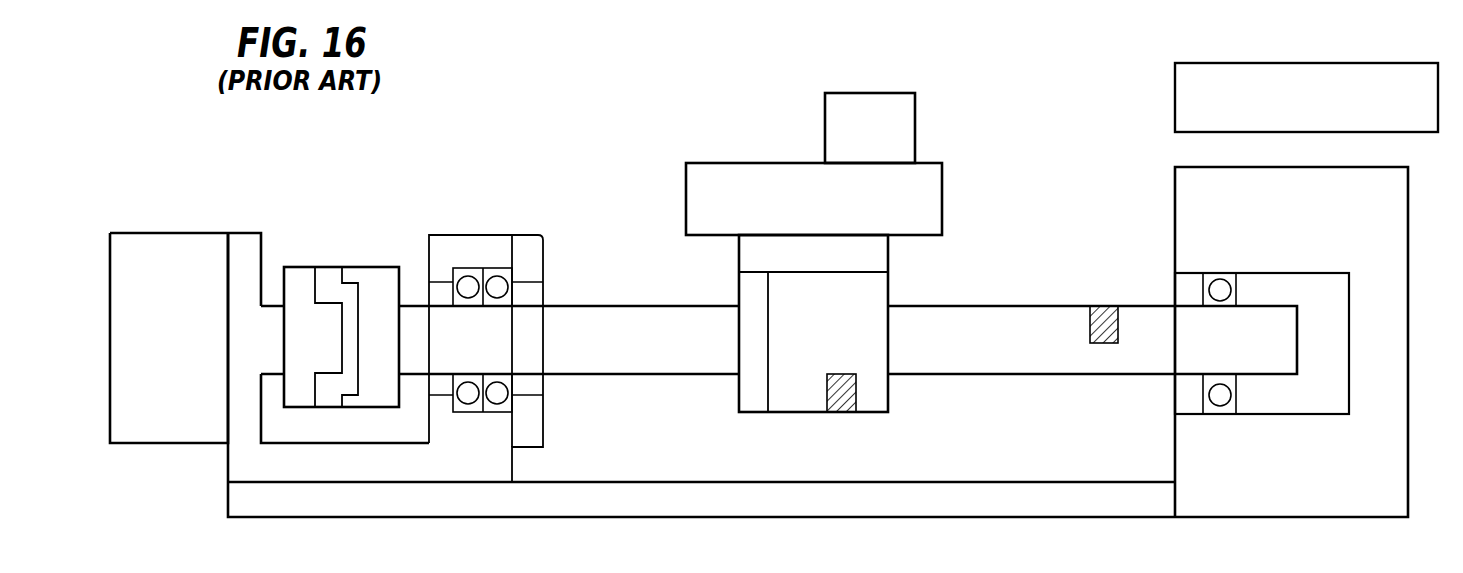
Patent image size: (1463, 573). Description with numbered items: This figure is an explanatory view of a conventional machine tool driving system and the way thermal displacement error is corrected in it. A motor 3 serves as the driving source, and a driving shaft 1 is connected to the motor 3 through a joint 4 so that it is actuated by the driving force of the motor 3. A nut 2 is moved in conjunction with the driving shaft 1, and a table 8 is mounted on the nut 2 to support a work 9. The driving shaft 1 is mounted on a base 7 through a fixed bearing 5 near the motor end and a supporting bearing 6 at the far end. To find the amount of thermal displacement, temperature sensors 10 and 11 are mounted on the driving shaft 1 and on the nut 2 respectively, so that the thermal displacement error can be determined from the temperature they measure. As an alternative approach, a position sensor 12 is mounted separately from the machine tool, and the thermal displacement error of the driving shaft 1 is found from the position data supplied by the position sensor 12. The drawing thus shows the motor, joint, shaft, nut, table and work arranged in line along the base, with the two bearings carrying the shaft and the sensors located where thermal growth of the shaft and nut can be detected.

The driving shaft 1 is at (848, 340).
The nut 2 is at (799, 368).
The motor 3 is at (160, 233).
The joint 4 is at (318, 262).
The fixed bearing 5 is at (429, 231).
The supporting bearing 6 is at (1284, 303).
The base 7 is at (818, 342).
The table 8 is at (752, 187).
The work 9 is at (823, 115).
The temperature sensor 10 is at (1094, 300).
The temperature sensor 11 is at (838, 418).
The position sensor 12 is at (1175, 88).